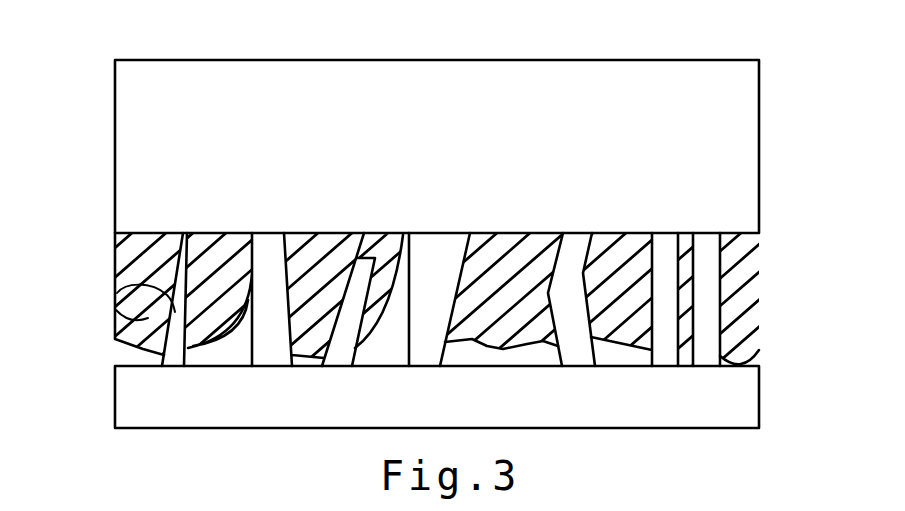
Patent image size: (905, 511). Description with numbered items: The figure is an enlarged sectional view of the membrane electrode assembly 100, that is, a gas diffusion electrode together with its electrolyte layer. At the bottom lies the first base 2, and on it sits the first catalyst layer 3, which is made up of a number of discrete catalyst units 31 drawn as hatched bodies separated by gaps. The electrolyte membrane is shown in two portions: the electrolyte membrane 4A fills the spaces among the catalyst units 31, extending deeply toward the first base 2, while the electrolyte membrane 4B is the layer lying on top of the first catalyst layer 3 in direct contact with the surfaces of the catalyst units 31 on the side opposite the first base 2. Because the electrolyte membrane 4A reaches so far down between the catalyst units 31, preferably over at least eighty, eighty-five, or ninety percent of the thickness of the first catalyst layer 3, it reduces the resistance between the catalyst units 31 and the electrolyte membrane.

The membrane electrode assembly 100 is at (115, 40).
The electrolyte membrane 4B is at (735, 150).
The electrolyte membrane 4A is at (122, 312).
The first catalyst layer 3 is at (449, 295).
The catalyst units 31 is at (125, 294).
The first base 2 is at (732, 407).